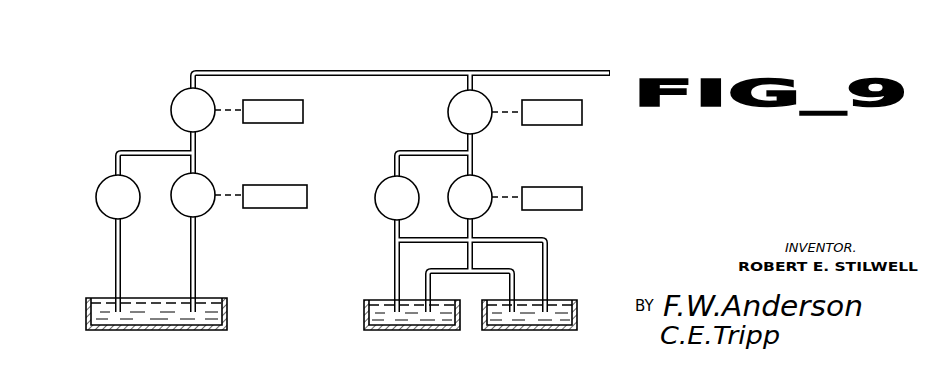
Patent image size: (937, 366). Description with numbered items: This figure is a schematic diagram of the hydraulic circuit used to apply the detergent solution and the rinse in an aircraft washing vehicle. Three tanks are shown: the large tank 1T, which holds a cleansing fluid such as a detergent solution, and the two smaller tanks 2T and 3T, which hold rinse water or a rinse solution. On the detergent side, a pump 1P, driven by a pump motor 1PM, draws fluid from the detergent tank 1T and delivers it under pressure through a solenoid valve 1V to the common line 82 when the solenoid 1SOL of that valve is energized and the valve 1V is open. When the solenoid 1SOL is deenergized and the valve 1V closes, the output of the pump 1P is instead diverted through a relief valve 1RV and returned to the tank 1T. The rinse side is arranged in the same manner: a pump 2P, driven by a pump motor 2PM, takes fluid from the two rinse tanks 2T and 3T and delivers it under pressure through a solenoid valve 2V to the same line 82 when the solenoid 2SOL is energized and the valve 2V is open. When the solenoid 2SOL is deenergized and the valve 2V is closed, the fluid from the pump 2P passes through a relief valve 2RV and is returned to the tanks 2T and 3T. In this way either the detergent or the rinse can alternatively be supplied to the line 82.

The line 82 is at (283, 70).
The solenoid valve 1V is at (175, 108).
The solenoid 1SOL is at (303, 112).
The relief valve 1RV is at (102, 190).
The pump 1P is at (208, 181).
The pump motor 1PM is at (257, 202).
The tank 1T is at (190, 332).
The solenoid valve 2V is at (453, 101).
The solenoid 2SOL is at (572, 117).
The relief valve 2RV is at (379, 190).
The pump 2P is at (485, 183).
The pump motor 2PM is at (552, 210).
The tank 2T is at (382, 332).
The tank 3T is at (495, 333).